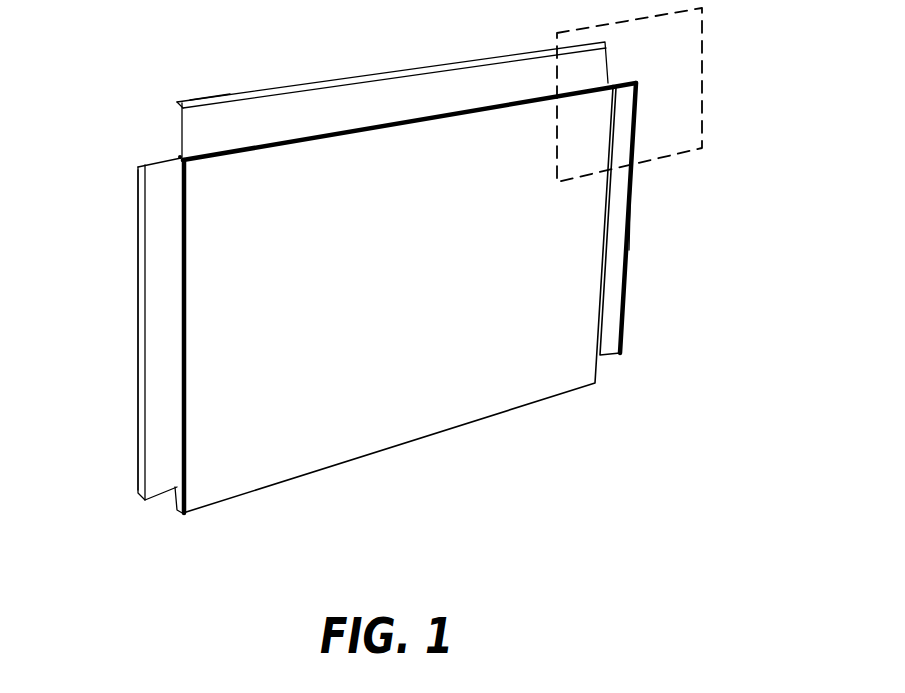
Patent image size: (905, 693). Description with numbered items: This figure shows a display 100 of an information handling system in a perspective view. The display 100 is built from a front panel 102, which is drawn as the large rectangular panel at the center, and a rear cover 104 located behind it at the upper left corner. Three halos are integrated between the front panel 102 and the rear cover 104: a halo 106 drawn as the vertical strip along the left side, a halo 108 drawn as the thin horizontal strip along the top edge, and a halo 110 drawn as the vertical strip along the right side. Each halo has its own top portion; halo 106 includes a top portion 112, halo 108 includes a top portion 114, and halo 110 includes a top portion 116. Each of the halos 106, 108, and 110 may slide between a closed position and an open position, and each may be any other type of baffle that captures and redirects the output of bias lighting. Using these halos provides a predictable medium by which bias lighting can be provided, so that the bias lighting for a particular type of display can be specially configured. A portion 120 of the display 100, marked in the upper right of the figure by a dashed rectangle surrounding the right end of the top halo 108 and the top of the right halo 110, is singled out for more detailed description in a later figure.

The display 100 is at (637, 525).
The front panel 102 is at (455, 403).
The rear cover 104 is at (178, 157).
The halo 106 is at (168, 360).
The halo 108 is at (343, 95).
The halo 110 is at (607, 318).
The top portion 112 is at (143, 245).
The top portion 114 is at (207, 102).
The top portion 116 is at (630, 210).
The portion 120 is at (703, 65).